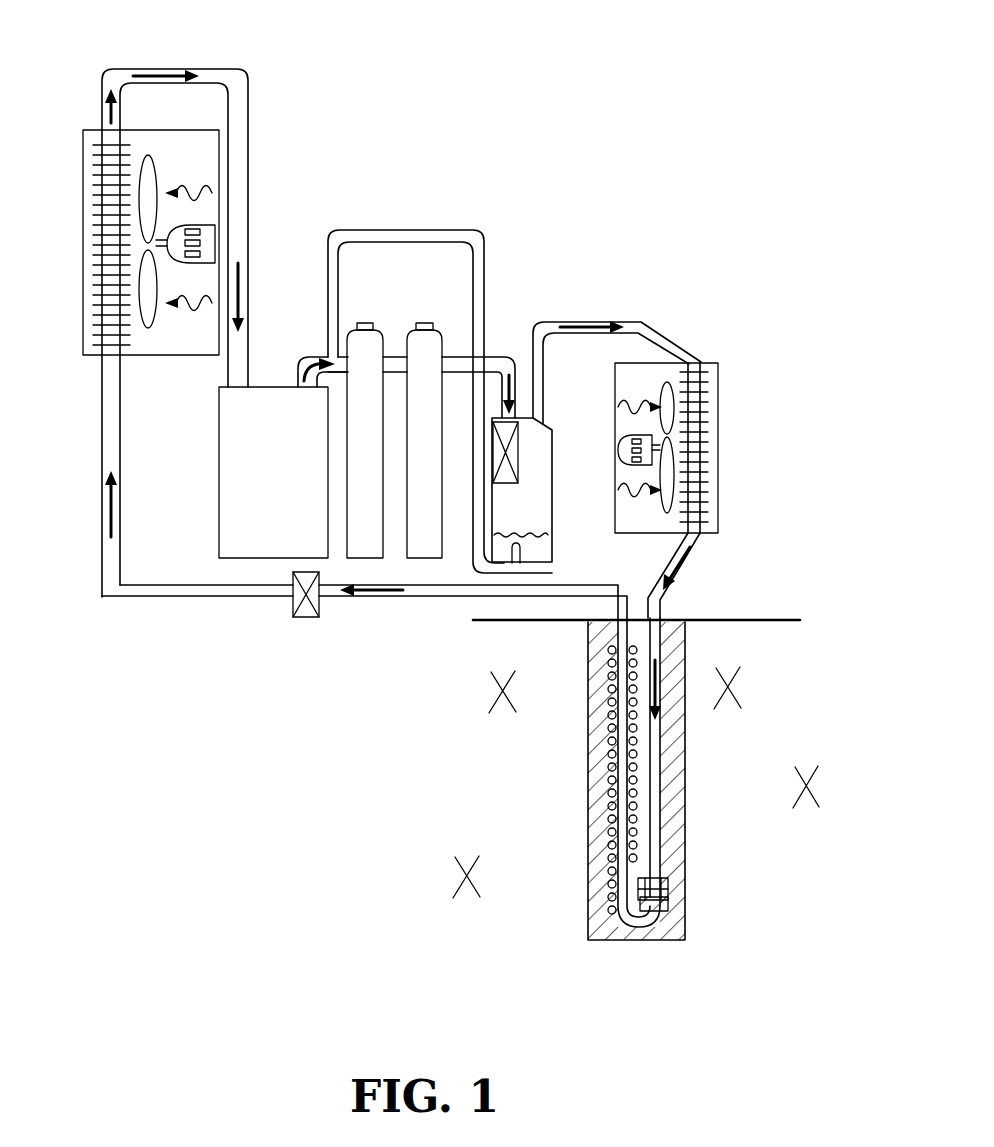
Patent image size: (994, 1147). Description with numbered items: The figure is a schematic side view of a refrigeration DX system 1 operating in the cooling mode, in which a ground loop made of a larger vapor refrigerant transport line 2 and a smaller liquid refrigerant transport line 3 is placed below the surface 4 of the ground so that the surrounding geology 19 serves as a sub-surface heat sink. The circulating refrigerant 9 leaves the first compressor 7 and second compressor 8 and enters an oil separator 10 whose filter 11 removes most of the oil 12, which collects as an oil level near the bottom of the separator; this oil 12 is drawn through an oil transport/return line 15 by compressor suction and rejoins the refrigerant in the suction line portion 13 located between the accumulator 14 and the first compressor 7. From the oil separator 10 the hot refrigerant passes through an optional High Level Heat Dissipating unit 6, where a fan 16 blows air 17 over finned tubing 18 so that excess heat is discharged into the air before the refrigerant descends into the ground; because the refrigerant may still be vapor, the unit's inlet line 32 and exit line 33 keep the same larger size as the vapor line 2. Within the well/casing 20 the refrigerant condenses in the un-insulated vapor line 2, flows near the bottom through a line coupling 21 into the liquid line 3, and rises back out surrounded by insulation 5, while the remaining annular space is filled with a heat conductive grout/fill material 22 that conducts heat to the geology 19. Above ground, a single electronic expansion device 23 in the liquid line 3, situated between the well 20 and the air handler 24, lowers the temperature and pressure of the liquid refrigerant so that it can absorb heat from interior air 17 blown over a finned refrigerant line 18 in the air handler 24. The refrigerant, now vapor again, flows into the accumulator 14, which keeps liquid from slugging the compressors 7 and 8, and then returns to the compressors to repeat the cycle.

The refrigeration DX system 1 is at (480, 145).
The larger vapor refrigerant transport line 2 is at (152, 70).
The smaller liquid refrigerant transport line 3 is at (198, 597).
The surface 4 is at (725, 619).
The insulation 5 is at (612, 783).
The High Level Heat Dissipating unit 6 is at (718, 470).
The first compressor 7 is at (363, 322).
The second compressor 8 is at (428, 322).
The refrigerant 9 is at (165, 75).
The oil separator 10 is at (547, 420).
The filter 11 is at (505, 458).
The oil 12 is at (527, 537).
The suction line portion 13 is at (300, 380).
The accumulator 14 is at (219, 493).
The oil transport/return line 15 is at (484, 257).
The fan 16 is at (208, 240).
The air 17 is at (192, 193).
The finned tubing 18 is at (125, 338).
The geology 19 is at (732, 688).
The well/casing 20 is at (588, 885).
The line coupling 21 is at (672, 906).
The grout/fill material 22 is at (670, 880).
The expansion device 23 is at (306, 618).
The air handler 24 is at (197, 130).
The inlet line 32 is at (690, 355).
The exit line 33 is at (703, 540).